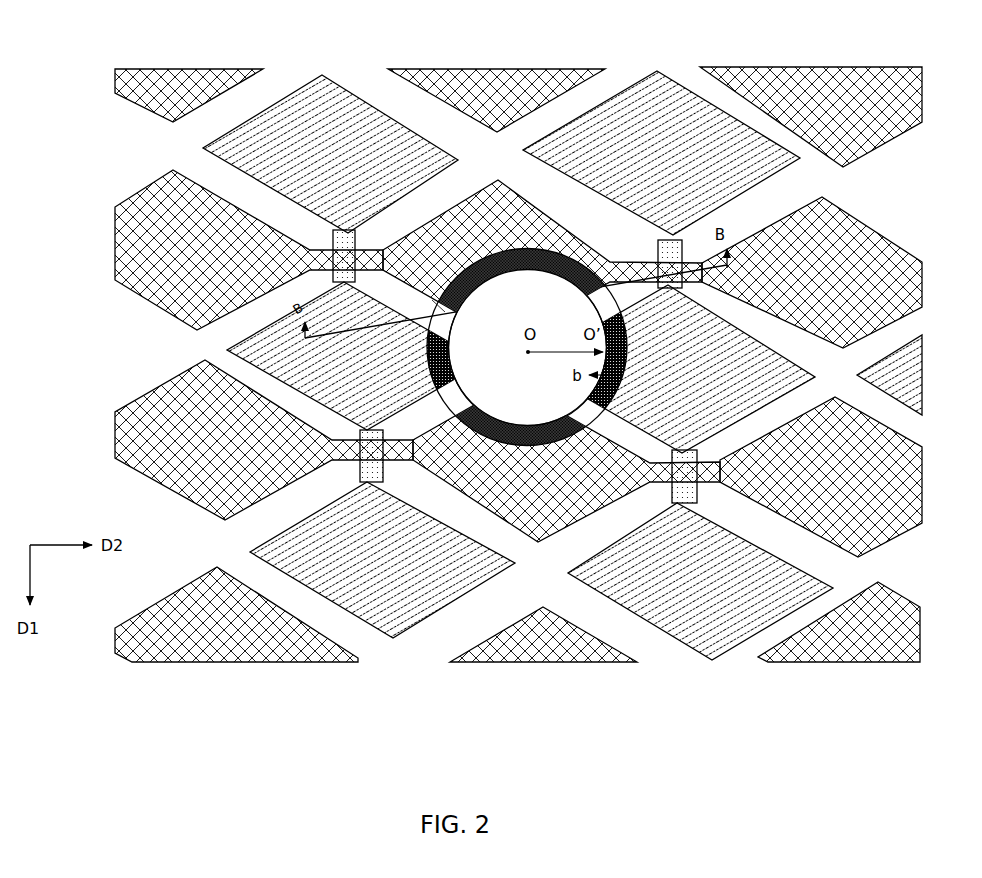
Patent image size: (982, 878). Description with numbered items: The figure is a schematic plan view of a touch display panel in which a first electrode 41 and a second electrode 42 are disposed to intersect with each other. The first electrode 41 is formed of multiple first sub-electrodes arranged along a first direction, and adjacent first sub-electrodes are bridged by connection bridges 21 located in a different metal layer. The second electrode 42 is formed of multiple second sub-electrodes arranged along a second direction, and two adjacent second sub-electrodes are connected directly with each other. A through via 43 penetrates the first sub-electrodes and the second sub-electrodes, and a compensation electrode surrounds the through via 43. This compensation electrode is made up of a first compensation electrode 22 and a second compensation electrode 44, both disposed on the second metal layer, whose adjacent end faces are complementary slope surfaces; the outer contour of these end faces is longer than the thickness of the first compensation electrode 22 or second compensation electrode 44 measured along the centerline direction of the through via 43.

The connection bridge 21 is at (372, 473).
The first compensation electrode 22 is at (437, 305).
The first electrode 41 is at (767, 582).
The second electrode 42 is at (575, 493).
The through via 43 is at (497, 388).
The second compensation electrode 44 is at (543, 260).